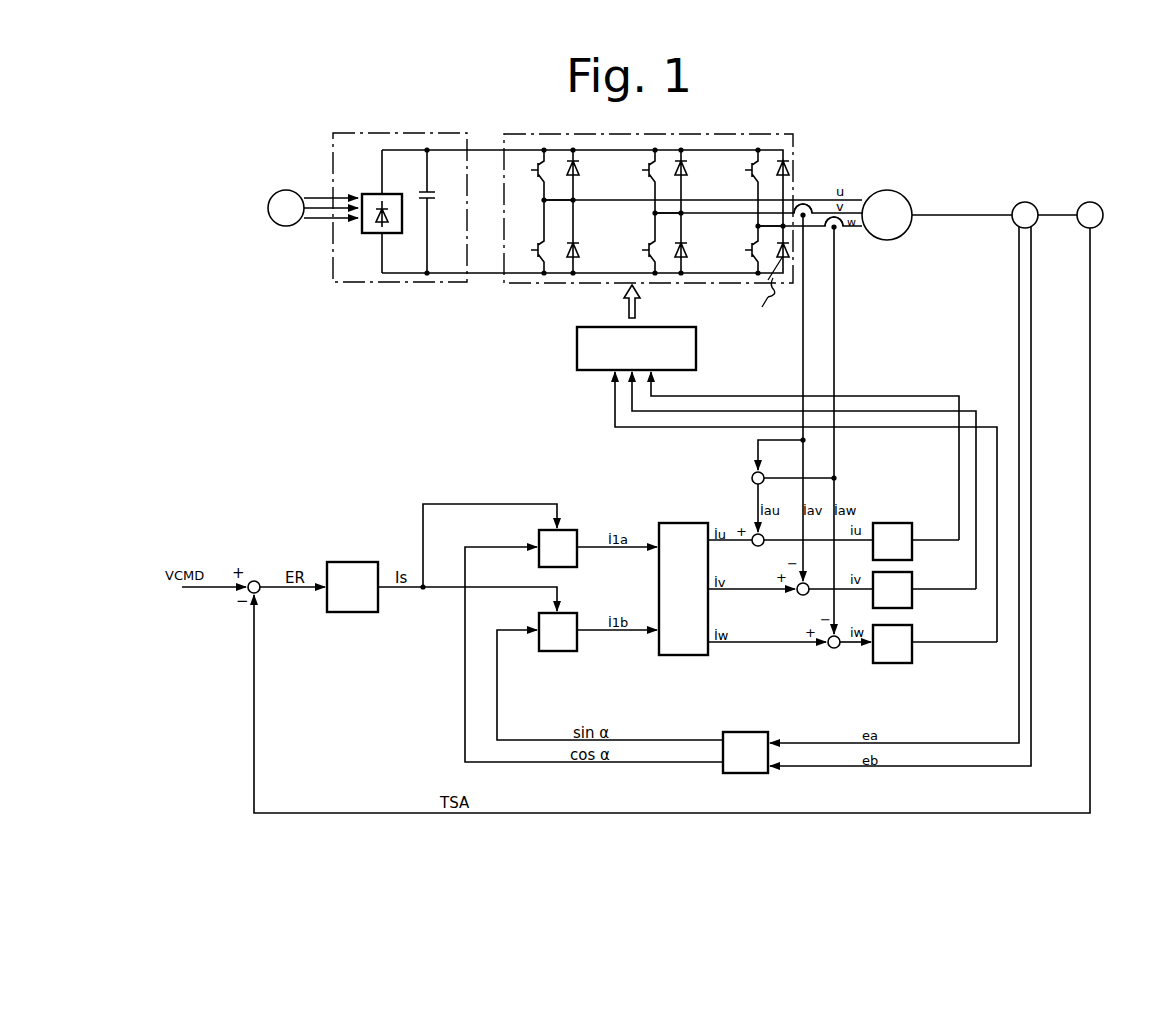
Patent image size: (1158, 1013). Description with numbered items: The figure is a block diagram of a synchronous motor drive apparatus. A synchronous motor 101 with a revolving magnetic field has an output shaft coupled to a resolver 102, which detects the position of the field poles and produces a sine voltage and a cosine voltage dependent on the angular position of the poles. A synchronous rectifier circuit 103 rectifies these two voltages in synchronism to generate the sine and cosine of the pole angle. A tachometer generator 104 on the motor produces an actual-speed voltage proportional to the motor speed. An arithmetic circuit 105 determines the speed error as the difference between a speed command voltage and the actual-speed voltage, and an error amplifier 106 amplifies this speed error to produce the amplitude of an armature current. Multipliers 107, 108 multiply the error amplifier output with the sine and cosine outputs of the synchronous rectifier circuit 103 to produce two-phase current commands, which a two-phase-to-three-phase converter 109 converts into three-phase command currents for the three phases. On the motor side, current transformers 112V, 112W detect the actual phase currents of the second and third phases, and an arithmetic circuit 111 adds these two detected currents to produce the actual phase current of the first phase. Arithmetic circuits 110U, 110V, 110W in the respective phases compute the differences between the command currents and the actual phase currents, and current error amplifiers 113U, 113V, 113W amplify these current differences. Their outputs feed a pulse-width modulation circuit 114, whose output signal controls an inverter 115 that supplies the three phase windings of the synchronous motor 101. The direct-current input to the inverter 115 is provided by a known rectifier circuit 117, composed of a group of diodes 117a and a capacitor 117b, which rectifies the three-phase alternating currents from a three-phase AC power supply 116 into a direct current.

The synchronous motor 101 is at (886, 240).
The resolver 102 is at (1030, 203).
The synchronous rectifier circuit 103 is at (748, 732).
The tachometer generator 104 is at (1094, 203).
The arithmetic circuit 105 is at (258, 579).
The error amplifier 106 is at (352, 562).
The multiplier 107 is at (570, 530).
The multiplier 108 is at (570, 613).
The two-phase-to-three-phase converter 109 is at (678, 523).
The arithmetic circuit 110U is at (756, 546).
The arithmetic circuit 110V is at (800, 595).
The arithmetic circuit 110W is at (830, 648).
The arithmetic circuit 111 is at (752, 475).
The current transformer 112V is at (812, 203).
The current transformer 112W is at (845, 218).
The current error amplifier 113U is at (895, 520).
The current error amplifier 113V is at (912, 576).
The current error amplifier 113W is at (912, 629).
The pulse-width modulation circuit 114 is at (577, 352).
The inverter 115 is at (750, 135).
The three-phase AC power supply 116 is at (280, 226).
The rectifier circuit 117 is at (437, 133).
The group of diodes 117a is at (362, 233).
The capacitor 117b is at (436, 200).